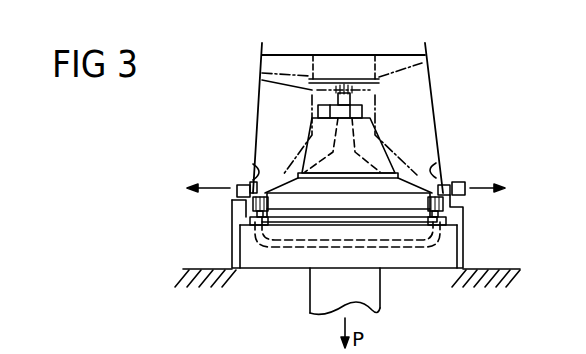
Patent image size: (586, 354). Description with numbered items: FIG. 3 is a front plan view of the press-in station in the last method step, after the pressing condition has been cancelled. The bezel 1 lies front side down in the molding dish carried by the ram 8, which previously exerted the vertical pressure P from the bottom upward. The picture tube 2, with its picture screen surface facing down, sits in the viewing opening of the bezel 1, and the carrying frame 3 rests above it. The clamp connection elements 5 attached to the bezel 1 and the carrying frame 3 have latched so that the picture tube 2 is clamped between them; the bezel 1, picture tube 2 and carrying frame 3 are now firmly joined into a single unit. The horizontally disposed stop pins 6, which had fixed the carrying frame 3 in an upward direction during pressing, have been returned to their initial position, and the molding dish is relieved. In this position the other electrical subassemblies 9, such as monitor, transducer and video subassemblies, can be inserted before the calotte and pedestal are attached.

The bezel 1 is at (292, 250).
The picture tube 2 is at (429, 173).
The carrying frame 3 is at (430, 87).
The clamp connection elements 5 is at (259, 193).
The stop pins 6 is at (256, 172).
The ram 8 is at (380, 269).
The electrical subassemblies 9 is at (275, 69).